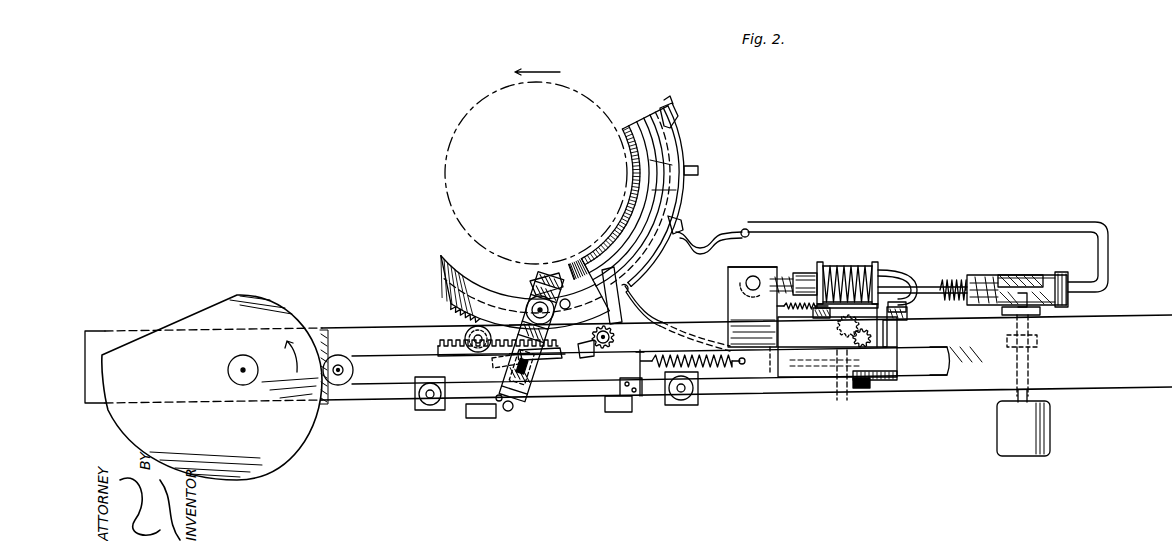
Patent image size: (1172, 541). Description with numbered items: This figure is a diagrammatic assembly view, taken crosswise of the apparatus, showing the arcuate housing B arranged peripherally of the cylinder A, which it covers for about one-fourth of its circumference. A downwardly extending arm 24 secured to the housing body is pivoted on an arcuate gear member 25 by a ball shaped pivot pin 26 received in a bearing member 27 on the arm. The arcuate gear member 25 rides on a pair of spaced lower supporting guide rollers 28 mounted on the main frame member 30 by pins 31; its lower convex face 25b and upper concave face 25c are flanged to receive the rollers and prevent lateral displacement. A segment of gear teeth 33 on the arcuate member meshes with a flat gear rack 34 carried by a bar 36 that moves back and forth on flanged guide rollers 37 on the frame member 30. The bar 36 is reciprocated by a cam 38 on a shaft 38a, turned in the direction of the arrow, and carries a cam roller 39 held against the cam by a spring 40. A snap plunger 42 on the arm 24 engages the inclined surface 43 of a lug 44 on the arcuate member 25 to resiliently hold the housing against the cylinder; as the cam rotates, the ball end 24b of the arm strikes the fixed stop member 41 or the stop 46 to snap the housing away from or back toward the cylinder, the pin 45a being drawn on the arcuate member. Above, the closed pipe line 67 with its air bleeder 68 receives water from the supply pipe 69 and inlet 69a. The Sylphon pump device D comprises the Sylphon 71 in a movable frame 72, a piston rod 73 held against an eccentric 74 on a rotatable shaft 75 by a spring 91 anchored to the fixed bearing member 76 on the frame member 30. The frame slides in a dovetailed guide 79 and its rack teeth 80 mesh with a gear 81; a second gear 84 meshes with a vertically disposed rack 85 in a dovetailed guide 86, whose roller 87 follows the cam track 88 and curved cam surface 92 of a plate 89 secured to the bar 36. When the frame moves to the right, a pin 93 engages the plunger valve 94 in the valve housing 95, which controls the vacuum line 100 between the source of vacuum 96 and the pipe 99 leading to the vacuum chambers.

The cylinder A is at (458, 130).
The arcuate housing B is at (668, 192).
The Sylphon pump device D is at (867, 273).
The arm 24 is at (528, 384).
The ball end 24b is at (510, 412).
The arcuate gear member 25 is at (438, 262).
The lower convex face 25b is at (592, 346).
The upper concave face 25c is at (440, 268).
The ball shaped pivot pin 26 is at (531, 303).
The bearing member 27 is at (545, 279).
The lower supporting guide roller 28 is at (466, 333).
The main frame member 30 is at (354, 332).
The pin 31 is at (616, 328).
The segment of gear teeth 33 is at (455, 310).
The flat gear rack 34 is at (440, 345).
The bar 36 is at (400, 384).
The flanged guide roller 37 is at (434, 406).
The cam 38 is at (280, 445).
The shaft 38a is at (242, 356).
The cam roller 39 is at (343, 362).
The spring 40 is at (718, 392).
The fixed stop member 41 is at (616, 412).
The snap plunger 42 is at (533, 376).
The inclined surface 43 is at (552, 356).
The lug 44 is at (512, 368).
The slide plate 45a is at (492, 362).
The stop 46 is at (480, 420).
The closed pipe line 67 is at (686, 222).
The air bleeder 68 is at (678, 114).
The water supply pipe 69 is at (634, 301).
The water supply inlet 69a is at (700, 170).
The Sylphon 71 is at (868, 262).
The movable frame 72 is at (880, 266).
The piston rod 73 is at (797, 272).
The eccentric 74 is at (745, 283).
The rotatable shaft 75 is at (756, 275).
The bearing member 76 is at (732, 308).
The dovetailed guide 79 is at (908, 298).
The rack teeth 80 is at (837, 324).
The gear 81 is at (852, 338).
The second gear 84 is at (837, 362).
The vertically disposed rack 85 is at (850, 372).
The dovetailed guide 86 is at (889, 334).
The roller 87 is at (860, 389).
The cam track 88 is at (841, 384).
The plate 89 is at (898, 379).
The spring 91 is at (802, 316).
The curved cam surface 92 is at (810, 378).
The pin 93 is at (905, 287).
The plunger valve 94 is at (1010, 274).
The valve housing 95 is at (1050, 272).
The source of vacuum 96 is at (1050, 420).
The pipe 99 is at (694, 244).
The vacuum line 100 is at (978, 221).